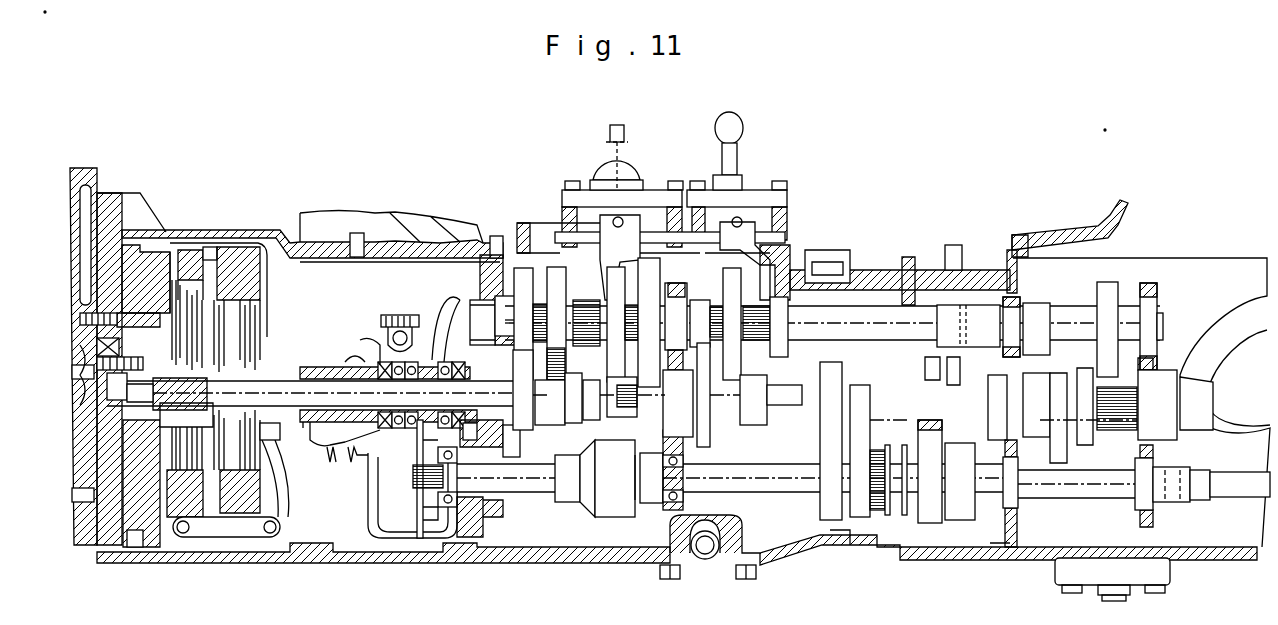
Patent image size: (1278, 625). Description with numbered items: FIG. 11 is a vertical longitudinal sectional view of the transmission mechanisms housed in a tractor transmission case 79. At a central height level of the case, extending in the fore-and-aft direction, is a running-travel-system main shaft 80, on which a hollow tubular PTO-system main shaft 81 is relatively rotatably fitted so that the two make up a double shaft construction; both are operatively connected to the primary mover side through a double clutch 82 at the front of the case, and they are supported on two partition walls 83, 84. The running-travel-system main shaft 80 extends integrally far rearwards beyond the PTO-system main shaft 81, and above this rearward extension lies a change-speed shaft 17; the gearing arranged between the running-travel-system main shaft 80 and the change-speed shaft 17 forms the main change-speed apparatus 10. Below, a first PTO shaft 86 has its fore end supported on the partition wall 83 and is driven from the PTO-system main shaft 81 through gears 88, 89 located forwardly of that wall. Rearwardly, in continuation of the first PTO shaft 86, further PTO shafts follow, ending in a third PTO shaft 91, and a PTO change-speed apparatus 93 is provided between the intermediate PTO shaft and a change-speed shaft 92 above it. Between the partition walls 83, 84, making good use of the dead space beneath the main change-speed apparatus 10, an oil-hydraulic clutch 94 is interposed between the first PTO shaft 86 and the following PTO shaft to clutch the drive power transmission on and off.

The main change-speed apparatus 10 is at (637, 258).
The change-speed shaft 17 is at (585, 290).
The transmission case 79 is at (633, 560).
The running-travel-system main shaft 80 is at (273, 378).
The PTO-system main shaft 81 is at (284, 450).
The double clutch 82 is at (240, 540).
The partition wall 83 is at (505, 440).
The partition wall 84 is at (670, 440).
The first PTO shaft 86 is at (530, 483).
The gear 88 is at (423, 355).
The gear 89 is at (418, 497).
The third PTO shaft 91 is at (767, 493).
The change-speed shaft 92 is at (823, 410).
The PTO change-speed apparatus 93 is at (916, 541).
The oil-hydraulic clutch 94 is at (612, 503).